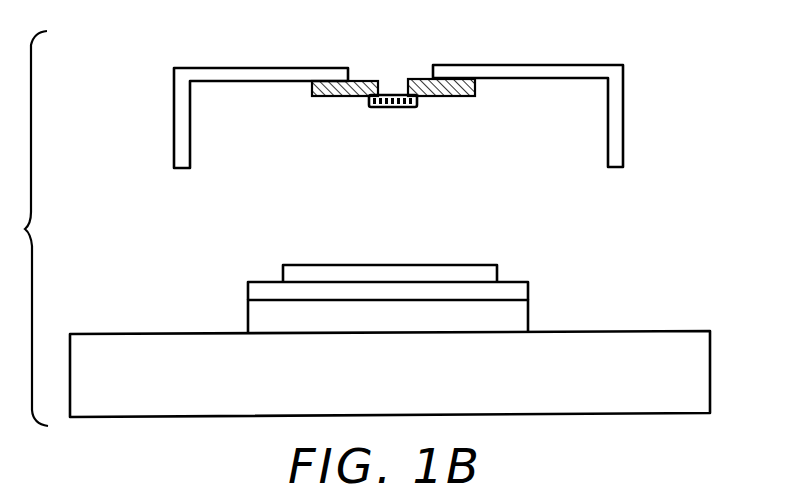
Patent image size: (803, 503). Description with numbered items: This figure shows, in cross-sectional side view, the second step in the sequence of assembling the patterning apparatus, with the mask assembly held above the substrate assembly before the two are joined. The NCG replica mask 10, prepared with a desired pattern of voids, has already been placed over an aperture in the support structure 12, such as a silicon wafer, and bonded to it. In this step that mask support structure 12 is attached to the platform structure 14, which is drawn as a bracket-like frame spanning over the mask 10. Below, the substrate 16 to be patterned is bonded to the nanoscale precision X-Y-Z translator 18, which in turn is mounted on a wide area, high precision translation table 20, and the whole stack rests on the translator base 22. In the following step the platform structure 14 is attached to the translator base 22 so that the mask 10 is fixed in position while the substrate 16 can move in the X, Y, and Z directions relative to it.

The NCG replica mask 10 is at (391, 95).
The support structure 12 is at (368, 80).
The platform structure 14 is at (592, 65).
The substrate 16 is at (498, 270).
The X-Y-Z translator 18 is at (529, 292).
The translation table 20 is at (530, 320).
The translator base 22 is at (670, 331).